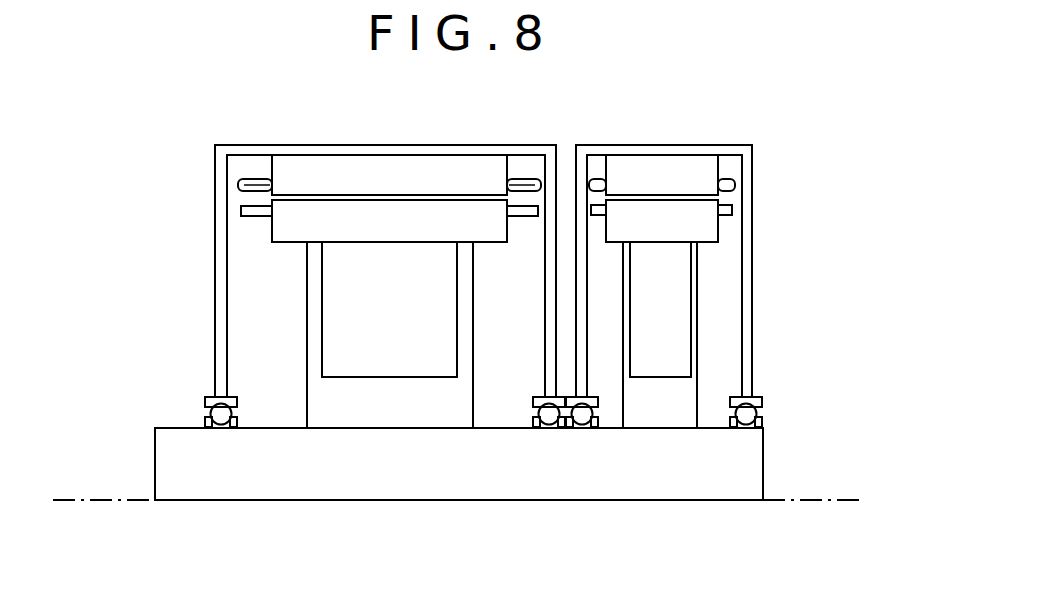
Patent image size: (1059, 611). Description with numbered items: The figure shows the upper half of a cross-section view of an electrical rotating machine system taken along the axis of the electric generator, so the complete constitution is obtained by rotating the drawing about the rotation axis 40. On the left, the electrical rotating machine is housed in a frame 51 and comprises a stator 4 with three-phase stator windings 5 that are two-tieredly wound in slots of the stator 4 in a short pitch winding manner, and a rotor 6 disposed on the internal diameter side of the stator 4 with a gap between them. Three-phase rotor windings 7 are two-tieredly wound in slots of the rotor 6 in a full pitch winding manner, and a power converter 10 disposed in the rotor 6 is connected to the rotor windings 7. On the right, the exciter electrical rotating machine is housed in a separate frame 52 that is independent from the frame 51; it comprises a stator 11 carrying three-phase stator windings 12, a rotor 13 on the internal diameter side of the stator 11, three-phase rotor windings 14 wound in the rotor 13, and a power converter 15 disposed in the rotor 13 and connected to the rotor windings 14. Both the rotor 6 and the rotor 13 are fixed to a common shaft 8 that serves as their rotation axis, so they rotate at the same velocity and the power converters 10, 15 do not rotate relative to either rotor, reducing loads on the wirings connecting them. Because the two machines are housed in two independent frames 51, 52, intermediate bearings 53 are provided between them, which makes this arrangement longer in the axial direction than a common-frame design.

The stator 4 is at (448, 160).
The three-phase stator windings 5 is at (240, 182).
The rotor 6 is at (277, 232).
The three-phase rotor windings 7 is at (242, 211).
The shaft 8 is at (183, 427).
The power converter 10 is at (333, 318).
The stator 11 is at (667, 160).
The three-phase stator windings 12 is at (725, 177).
The rotor 13 is at (707, 231).
The three-phase rotor windings 14 is at (735, 208).
The power converter 15 is at (677, 345).
The rotation axis 40 is at (95, 498).
The frame 51 is at (215, 316).
The frame 52 is at (753, 282).
The intermediate bearings 53 is at (581, 420).